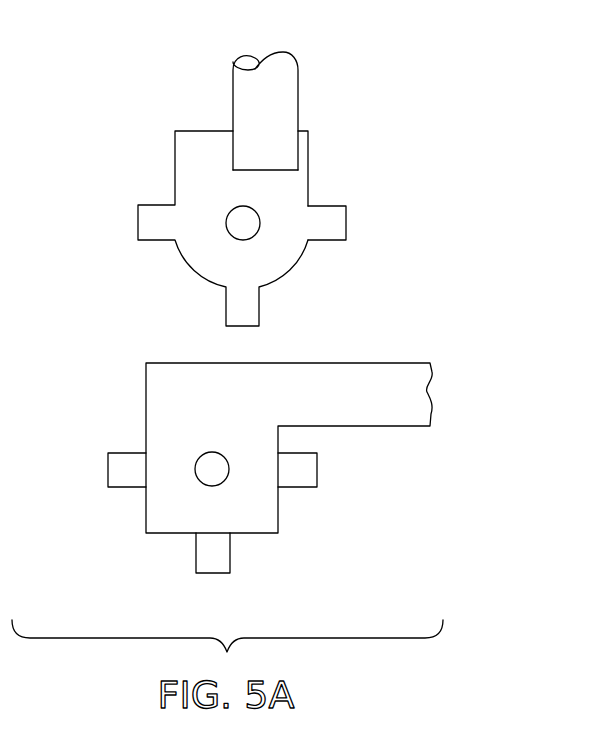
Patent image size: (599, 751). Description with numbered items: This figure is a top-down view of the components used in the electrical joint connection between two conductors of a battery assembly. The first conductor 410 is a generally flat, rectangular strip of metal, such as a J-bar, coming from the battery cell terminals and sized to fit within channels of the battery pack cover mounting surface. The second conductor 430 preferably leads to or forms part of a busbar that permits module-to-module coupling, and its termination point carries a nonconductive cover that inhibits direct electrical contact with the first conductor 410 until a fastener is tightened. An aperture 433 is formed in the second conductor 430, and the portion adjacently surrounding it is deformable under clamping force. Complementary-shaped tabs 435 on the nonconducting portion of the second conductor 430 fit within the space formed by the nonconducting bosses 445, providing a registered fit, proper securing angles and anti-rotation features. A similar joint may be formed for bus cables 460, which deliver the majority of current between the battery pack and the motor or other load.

The first conductor 410 is at (448, 388).
The second conductor 430 is at (198, 168).
The aperture 433 is at (229, 230).
The tabs 435 is at (348, 224).
The bosses 445 is at (326, 469).
The bus cables 460 is at (308, 93).